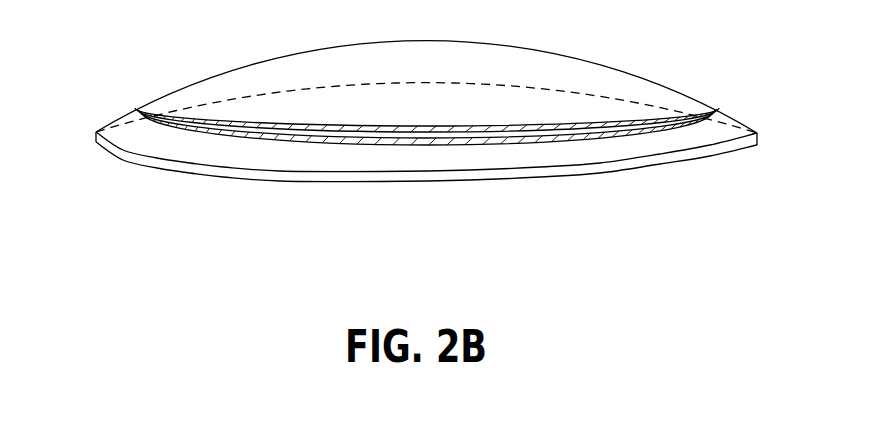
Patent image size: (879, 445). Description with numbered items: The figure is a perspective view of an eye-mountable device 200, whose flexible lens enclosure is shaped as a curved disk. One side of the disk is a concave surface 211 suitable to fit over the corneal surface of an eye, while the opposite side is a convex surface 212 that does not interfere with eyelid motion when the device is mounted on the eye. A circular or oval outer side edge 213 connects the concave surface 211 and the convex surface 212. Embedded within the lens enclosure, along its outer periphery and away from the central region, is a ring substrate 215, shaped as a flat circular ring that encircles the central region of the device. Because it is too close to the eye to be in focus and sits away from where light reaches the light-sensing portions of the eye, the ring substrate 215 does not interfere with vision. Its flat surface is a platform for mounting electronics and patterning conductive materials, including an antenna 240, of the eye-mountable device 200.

The eye-mountable device 200 is at (191, 43).
The concave surface 211 is at (677, 158).
The convex surface 212 is at (667, 82).
The outer side edge 213 is at (578, 175).
The ring substrate 215 is at (140, 112).
The antenna 240 is at (708, 108).